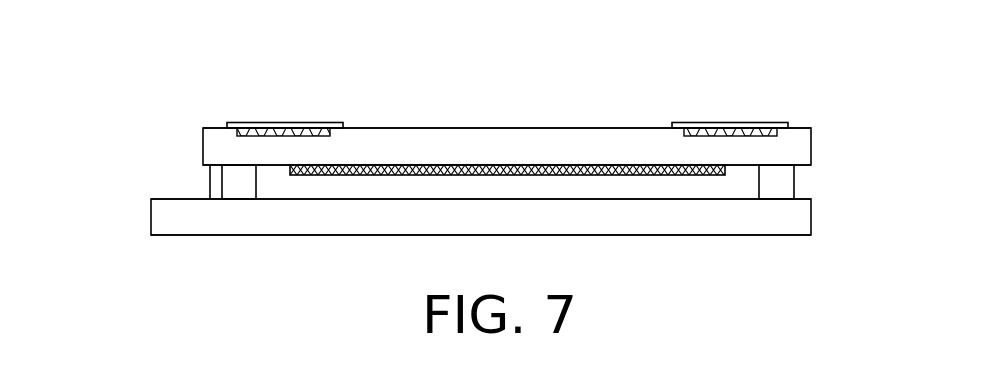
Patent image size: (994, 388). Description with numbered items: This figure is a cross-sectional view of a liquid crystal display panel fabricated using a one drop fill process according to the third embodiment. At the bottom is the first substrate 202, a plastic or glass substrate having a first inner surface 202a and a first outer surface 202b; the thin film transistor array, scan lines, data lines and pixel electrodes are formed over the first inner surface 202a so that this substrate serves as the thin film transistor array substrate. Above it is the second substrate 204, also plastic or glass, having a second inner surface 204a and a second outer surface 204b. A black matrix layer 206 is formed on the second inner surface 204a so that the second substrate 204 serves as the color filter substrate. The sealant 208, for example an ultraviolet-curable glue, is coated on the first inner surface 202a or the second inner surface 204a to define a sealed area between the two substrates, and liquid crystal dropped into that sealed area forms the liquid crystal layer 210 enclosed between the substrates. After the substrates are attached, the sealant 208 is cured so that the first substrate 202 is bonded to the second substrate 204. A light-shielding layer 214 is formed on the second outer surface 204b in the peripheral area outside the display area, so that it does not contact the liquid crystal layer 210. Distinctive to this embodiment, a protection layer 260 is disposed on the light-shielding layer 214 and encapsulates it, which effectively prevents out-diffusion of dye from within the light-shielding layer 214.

The first substrate 202 is at (803, 223).
The first inner surface 202a is at (188, 198).
The first outer surface 202b is at (188, 236).
The second substrate 204 is at (802, 148).
The second inner surface 204a is at (211, 166).
The second outer surface 204b is at (213, 127).
The black matrix layer 206 is at (530, 165).
The sealant 208 is at (785, 185).
The liquid crystal layer 210 is at (592, 187).
The light-shielding layer 214 is at (767, 127).
The protection layer 260 is at (262, 124).